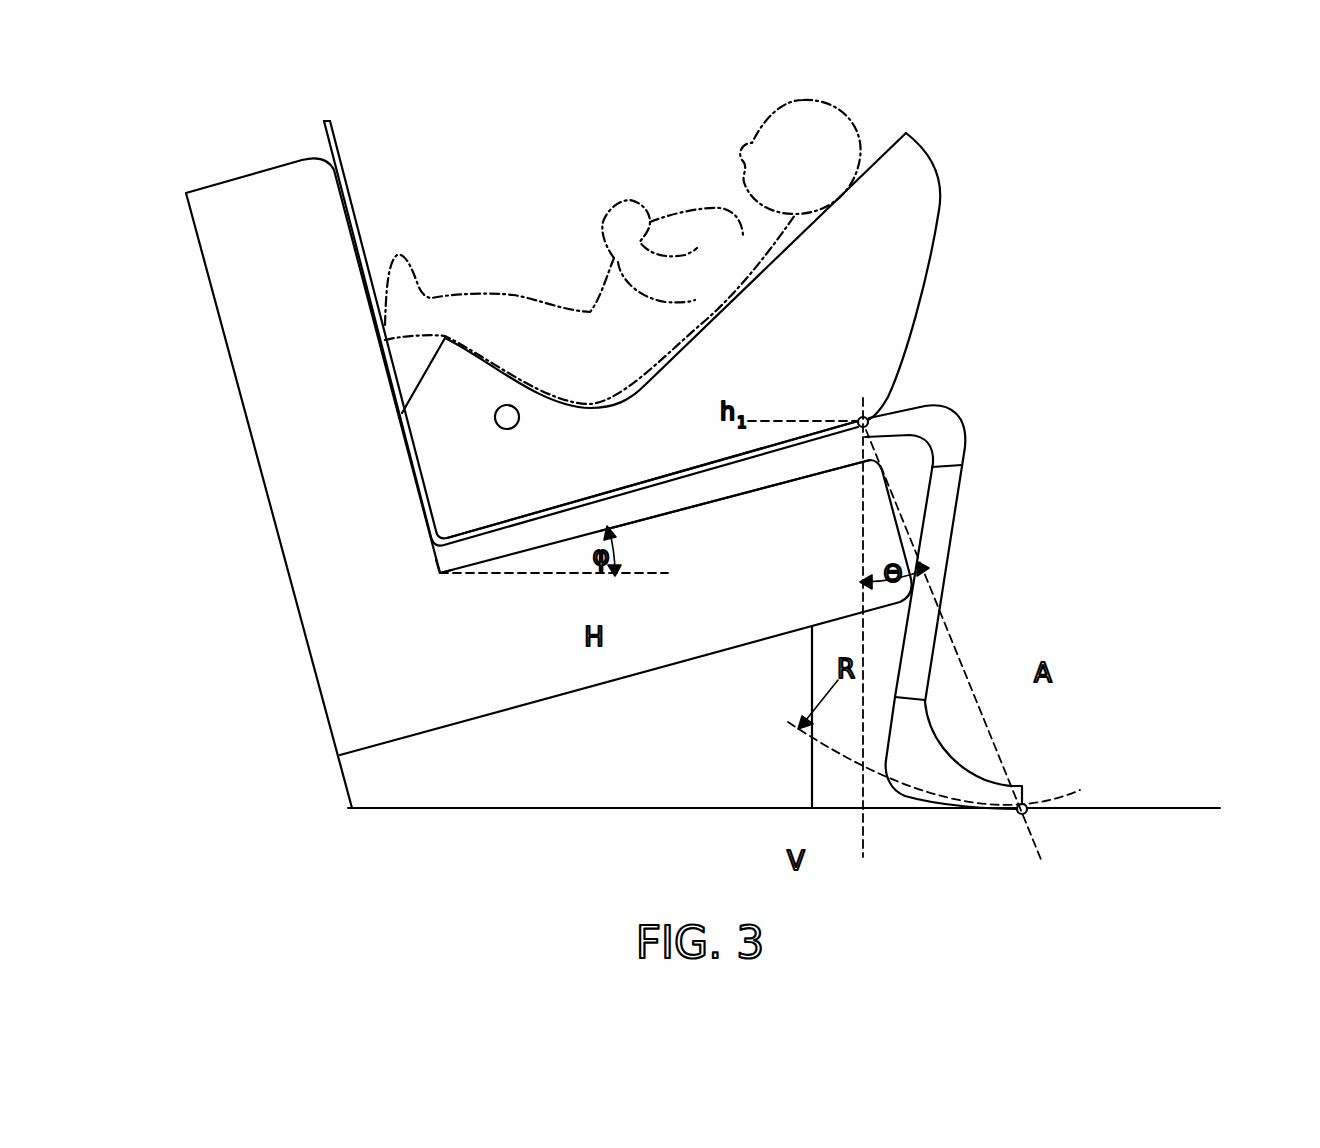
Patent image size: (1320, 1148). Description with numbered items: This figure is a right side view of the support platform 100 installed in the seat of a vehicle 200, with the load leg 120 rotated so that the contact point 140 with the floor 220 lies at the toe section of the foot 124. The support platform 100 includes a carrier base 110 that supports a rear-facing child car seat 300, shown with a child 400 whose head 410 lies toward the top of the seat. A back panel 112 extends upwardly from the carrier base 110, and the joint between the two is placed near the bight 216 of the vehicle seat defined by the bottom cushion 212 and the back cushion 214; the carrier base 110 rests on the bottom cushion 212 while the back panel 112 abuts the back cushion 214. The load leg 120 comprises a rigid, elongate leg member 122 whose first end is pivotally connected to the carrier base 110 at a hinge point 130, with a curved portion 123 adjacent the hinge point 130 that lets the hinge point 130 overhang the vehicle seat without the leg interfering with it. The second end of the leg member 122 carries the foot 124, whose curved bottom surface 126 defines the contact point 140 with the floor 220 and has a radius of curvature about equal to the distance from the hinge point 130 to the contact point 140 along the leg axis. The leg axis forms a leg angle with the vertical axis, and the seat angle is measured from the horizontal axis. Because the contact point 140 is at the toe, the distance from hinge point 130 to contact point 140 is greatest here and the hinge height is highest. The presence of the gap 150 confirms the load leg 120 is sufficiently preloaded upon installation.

The support platform 100 is at (729, 504).
The carrier base 110 is at (684, 472).
The back panel 112 is at (348, 198).
The load leg 120 is at (980, 635).
The leg member 122 is at (956, 527).
The curved portion 123 is at (963, 425).
The foot 124 is at (1030, 795).
The bottom surface 126 is at (920, 800).
The hinge point 130 is at (856, 416).
The contact point 140 is at (1037, 826).
The gap 150 is at (788, 468).
The vehicle 200 is at (549, 483).
The bottom cushion 212 is at (520, 698).
The back cushion 214 is at (306, 457).
The bight 216 is at (438, 577).
The floor 220 is at (1162, 807).
The child car seat 300 is at (910, 228).
The child 400 is at (637, 224).
The head of the child 410 is at (814, 129).